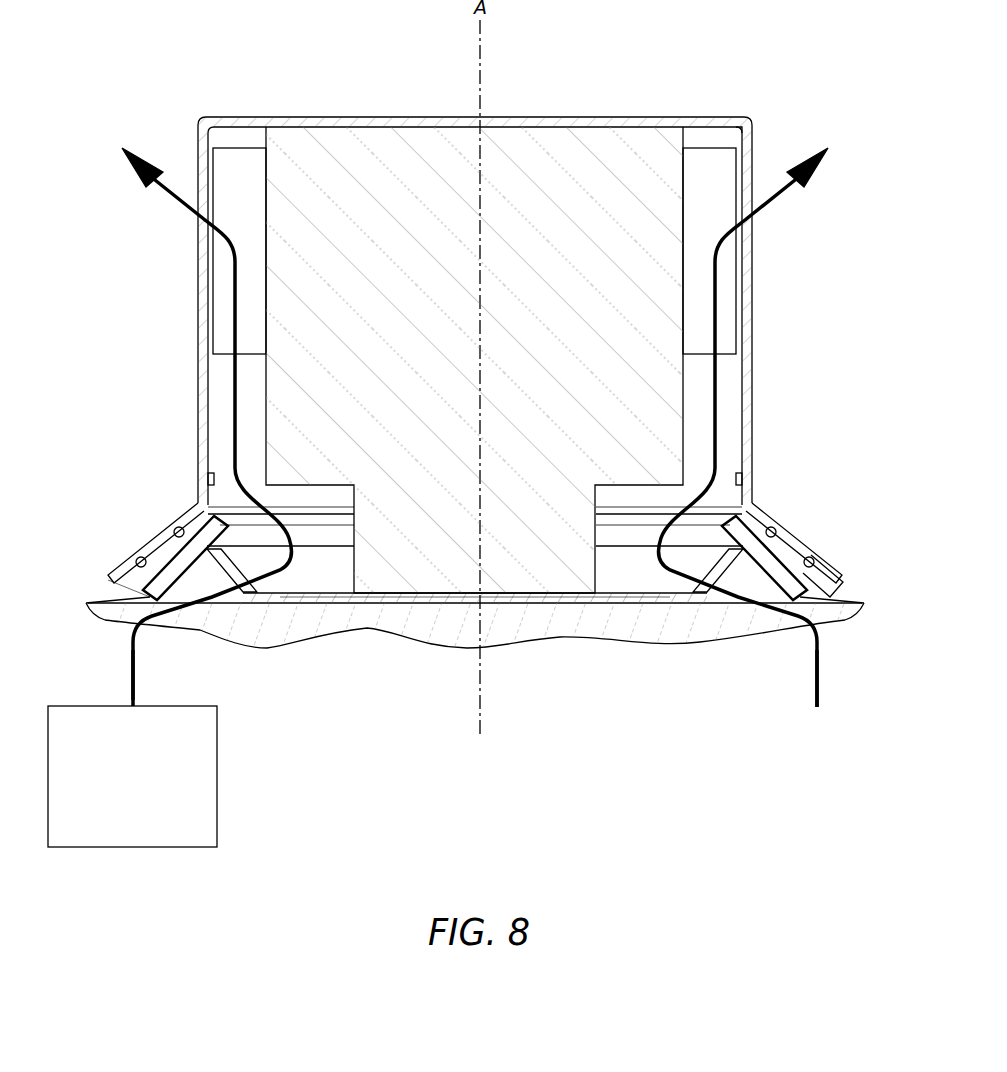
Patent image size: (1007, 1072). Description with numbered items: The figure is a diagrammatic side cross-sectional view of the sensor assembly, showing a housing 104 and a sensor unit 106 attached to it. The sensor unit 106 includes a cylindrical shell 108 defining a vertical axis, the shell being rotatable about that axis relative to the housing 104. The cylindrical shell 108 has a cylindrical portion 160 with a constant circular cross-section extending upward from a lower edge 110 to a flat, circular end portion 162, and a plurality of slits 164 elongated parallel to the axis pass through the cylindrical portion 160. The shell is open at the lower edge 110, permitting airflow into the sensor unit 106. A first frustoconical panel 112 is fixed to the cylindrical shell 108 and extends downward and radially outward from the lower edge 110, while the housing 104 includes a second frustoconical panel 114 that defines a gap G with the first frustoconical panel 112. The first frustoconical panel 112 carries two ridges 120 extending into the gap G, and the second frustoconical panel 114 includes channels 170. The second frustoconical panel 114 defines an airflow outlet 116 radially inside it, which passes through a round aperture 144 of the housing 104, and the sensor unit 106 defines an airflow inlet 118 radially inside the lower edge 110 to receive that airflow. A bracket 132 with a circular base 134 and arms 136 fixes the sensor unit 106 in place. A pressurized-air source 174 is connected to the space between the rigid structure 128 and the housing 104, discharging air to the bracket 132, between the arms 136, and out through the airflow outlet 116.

The housing 104 is at (95, 602).
The sensor unit 106 is at (357, 112).
The cylindrical shell 108 is at (200, 116).
The lower edge 110 is at (198, 500).
The first frustoconical panel 112 is at (172, 528).
The second frustoconical panel 114 is at (165, 565).
The airflow outlet 116 is at (742, 502).
The airflow inlet 118 is at (716, 515).
The ridge 120 is at (778, 525).
The rigid structure 128 is at (548, 622).
The bracket 132 is at (372, 605).
The circular base 134 is at (642, 597).
The arm 136 is at (268, 585).
The aperture 144 is at (130, 628).
The cylindrical portion 160 is at (753, 345).
The end portion 162 is at (690, 116).
The slit 164 is at (200, 228).
The channel 170 is at (772, 592).
The pressurized-air source 174 is at (192, 848).
The gap G is at (120, 586).